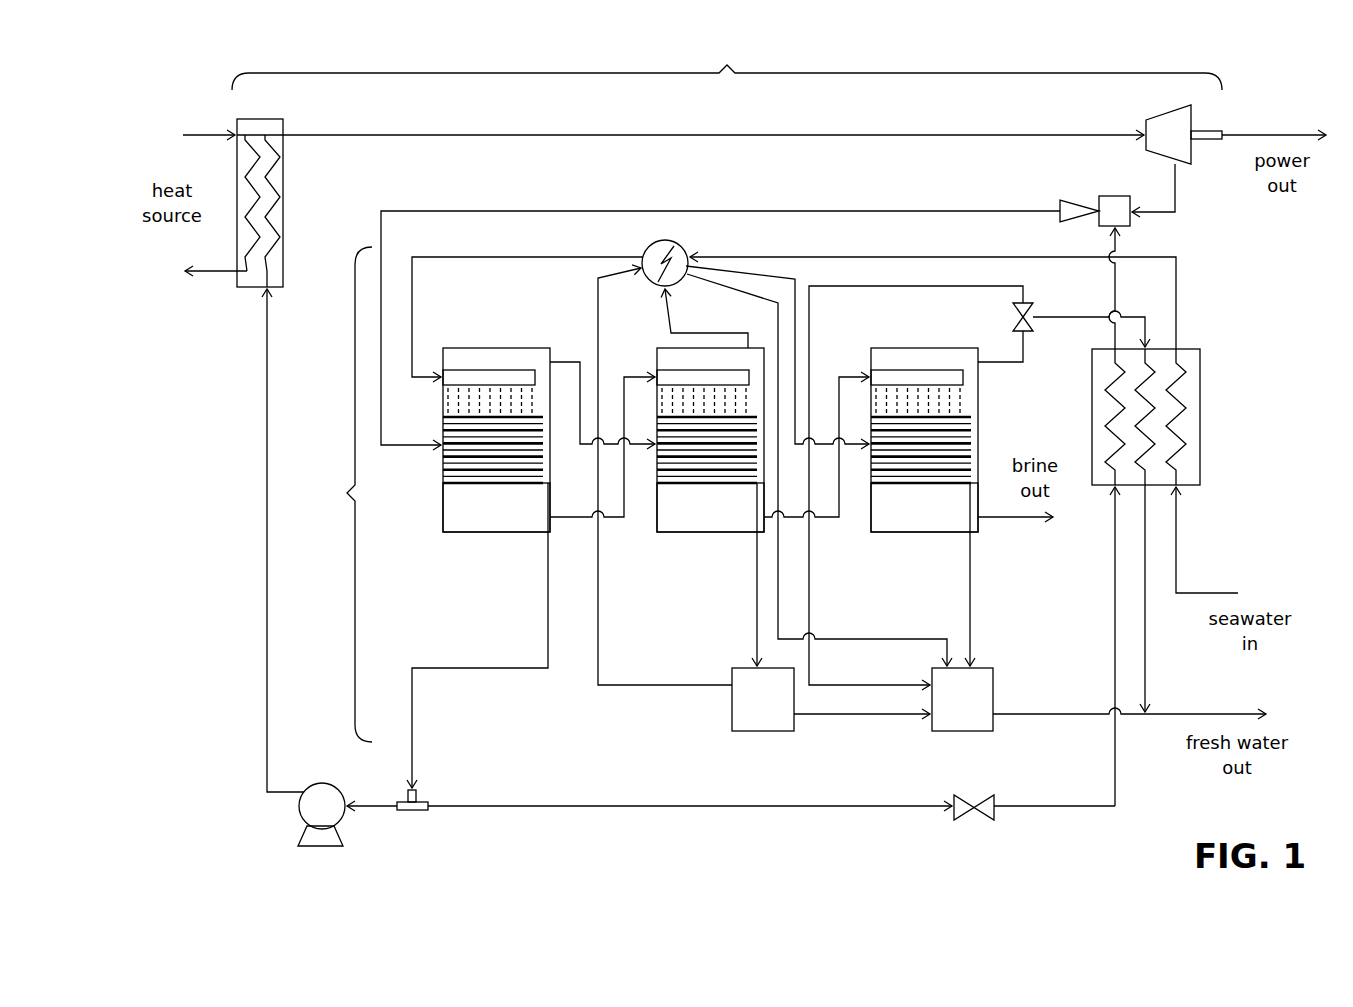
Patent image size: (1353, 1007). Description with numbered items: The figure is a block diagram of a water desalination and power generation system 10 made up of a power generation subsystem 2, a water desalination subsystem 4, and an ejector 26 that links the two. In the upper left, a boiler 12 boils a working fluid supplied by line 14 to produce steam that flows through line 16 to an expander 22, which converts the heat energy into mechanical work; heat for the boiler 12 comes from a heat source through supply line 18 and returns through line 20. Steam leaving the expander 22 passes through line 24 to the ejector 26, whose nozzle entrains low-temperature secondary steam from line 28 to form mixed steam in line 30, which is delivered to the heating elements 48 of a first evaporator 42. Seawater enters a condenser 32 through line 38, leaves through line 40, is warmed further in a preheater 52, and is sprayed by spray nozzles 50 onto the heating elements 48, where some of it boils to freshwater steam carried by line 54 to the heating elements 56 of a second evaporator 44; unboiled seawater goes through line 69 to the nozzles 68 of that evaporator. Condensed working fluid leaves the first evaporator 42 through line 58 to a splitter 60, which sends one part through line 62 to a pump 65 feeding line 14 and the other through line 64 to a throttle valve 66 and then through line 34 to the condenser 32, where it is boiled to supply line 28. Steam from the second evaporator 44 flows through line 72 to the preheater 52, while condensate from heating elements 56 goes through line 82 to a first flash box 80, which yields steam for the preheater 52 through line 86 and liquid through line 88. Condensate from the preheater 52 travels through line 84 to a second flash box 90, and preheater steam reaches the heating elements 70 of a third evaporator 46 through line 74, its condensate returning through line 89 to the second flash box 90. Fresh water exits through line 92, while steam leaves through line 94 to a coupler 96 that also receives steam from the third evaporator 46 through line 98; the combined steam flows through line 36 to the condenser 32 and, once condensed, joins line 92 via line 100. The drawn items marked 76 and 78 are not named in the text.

The power generation subsystem 2 is at (727, 66).
The water desalination subsystem 4 is at (348, 494).
The water desalination and power generation system 10 is at (175, 702).
The boiler 12 is at (272, 122).
The line 14 is at (268, 580).
The line 16 is at (708, 133).
The supply line 18 is at (207, 133).
The line 20 is at (210, 275).
The expander 22 is at (1168, 117).
The line 24 is at (1177, 180).
The ejector 26 is at (1082, 178).
The line 28 is at (1112, 312).
The line 30 is at (752, 210).
The condenser 32 is at (1190, 357).
The line 34 is at (1112, 615).
The line 36 is at (1062, 322).
The line 38 is at (1178, 590).
The line 40 is at (1178, 296).
The first evaporator 42 is at (473, 451).
The second evaporator 44 is at (688, 451).
The third evaporator 46 is at (901, 451).
The heating elements 48 is at (490, 490).
The spray nozzles 50 is at (478, 362).
The preheater 52 is at (661, 240).
The line 54 is at (563, 358).
The heating elements 56 is at (704, 490).
The line 58 is at (547, 645).
The splitter 60 is at (415, 812).
The line 62 is at (372, 812).
The line 64 is at (690, 805).
The pump 65 is at (315, 810).
The throttle valve 66 is at (962, 812).
The nozzles 68 is at (678, 362).
The line 69 is at (570, 522).
The heating elements 70 is at (917, 490).
The line 72 is at (671, 316).
The line 74 is at (737, 270).
The brine transfer line 76 is at (855, 375).
The spray header of third stage 78 is at (912, 362).
The first flash box 80 is at (763, 699).
The line 82 is at (755, 637).
The line 84 is at (855, 638).
The line 86 is at (648, 686).
The line 88 is at (838, 716).
The line 89 is at (972, 601).
The second flash box 90 is at (962, 699).
The line 92 is at (1038, 713).
The line 94 is at (862, 684).
The coupler 96 is at (1034, 310).
The line 98 is at (1003, 367).
The line 100 is at (1147, 680).